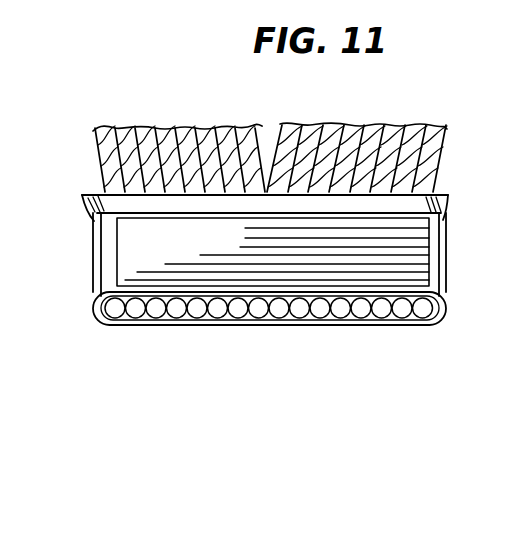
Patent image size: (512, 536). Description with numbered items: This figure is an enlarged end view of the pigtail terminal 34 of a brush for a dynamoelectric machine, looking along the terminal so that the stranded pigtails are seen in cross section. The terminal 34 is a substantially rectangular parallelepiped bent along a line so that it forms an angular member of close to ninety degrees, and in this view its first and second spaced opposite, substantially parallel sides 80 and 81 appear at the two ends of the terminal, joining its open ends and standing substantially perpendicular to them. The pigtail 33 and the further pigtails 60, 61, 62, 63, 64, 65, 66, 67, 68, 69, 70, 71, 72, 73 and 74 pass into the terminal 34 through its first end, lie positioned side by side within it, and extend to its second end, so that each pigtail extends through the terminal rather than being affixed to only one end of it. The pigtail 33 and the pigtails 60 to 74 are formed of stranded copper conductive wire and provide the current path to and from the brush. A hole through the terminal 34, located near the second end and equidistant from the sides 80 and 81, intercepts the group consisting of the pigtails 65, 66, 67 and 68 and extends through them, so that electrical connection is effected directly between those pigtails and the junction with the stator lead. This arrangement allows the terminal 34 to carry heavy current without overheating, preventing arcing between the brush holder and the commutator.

The pigtail 33 is at (115, 312).
The pigtail terminal 34 is at (420, 252).
The pigtail 60 is at (133, 318).
The pigtail 61 is at (157, 317).
The pigtail 62 is at (177, 313).
The pigtail 63 is at (197, 313).
The pigtail 64 is at (216, 304).
The pigtail 65 is at (237, 299).
The pigtail 66 is at (256, 298).
The pigtail 67 is at (281, 312).
The pigtail 68 is at (300, 312).
The pigtail 69 is at (320, 312).
The pigtail 70 is at (341, 312).
The pigtail 71 is at (362, 312).
The pigtail 72 is at (382, 312).
The pigtail 73 is at (404, 315).
The pigtail 74 is at (425, 310).
The first side 80 is at (440, 235).
The second side 81 is at (92, 250).